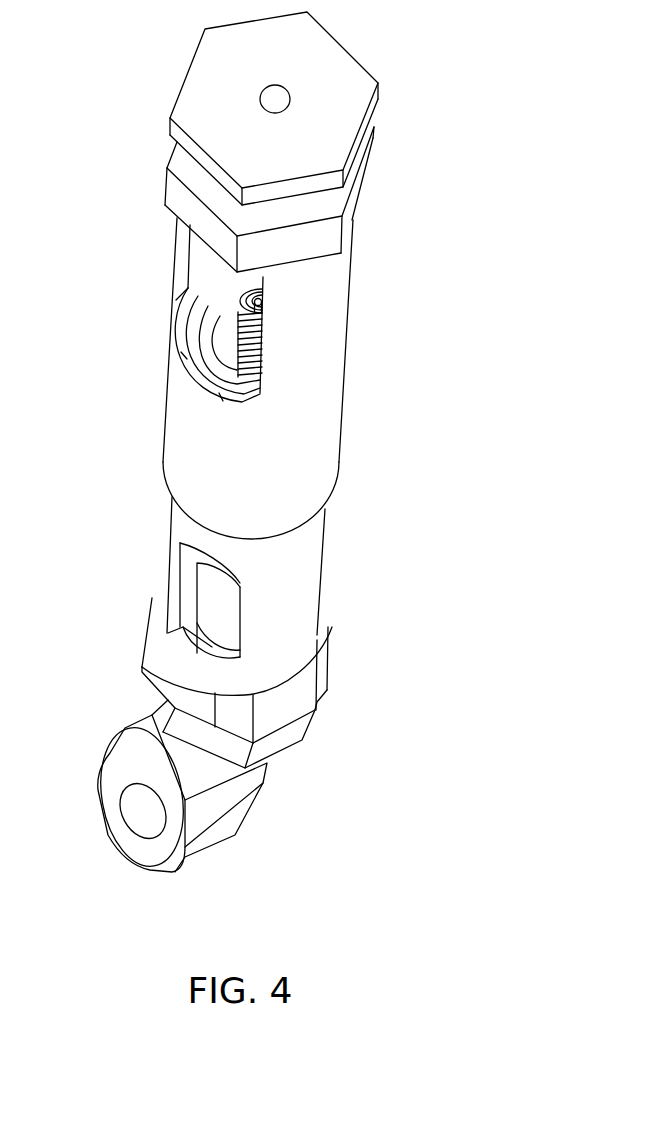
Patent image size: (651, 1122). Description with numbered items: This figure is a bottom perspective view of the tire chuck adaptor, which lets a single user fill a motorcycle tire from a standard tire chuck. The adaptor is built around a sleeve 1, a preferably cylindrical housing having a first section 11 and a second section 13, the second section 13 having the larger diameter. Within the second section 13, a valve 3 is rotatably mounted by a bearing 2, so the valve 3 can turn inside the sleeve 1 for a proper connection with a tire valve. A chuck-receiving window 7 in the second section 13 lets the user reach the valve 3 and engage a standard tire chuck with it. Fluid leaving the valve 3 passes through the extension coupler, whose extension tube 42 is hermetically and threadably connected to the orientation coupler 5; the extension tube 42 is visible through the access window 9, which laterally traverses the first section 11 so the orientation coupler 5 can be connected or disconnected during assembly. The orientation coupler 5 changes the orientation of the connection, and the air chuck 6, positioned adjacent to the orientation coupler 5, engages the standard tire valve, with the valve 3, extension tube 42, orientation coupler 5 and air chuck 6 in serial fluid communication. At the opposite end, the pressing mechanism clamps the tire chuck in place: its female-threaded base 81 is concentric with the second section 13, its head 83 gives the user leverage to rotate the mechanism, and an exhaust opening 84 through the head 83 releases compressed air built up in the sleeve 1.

The sleeve 1 is at (404, 471).
The bearing 2 is at (190, 335).
The valve 3 is at (265, 350).
The orientation coupler 5 is at (352, 665).
The air chuck 6 is at (97, 711).
The chuck-receiving window 7 is at (201, 262).
The access window 9 is at (181, 564).
The first section 11 is at (262, 580).
The second section 13 is at (250, 476).
The extension tube 42 is at (203, 618).
The female-threaded base 81 is at (333, 236).
The head 83 is at (182, 108).
The exhaust opening 84 is at (275, 92).